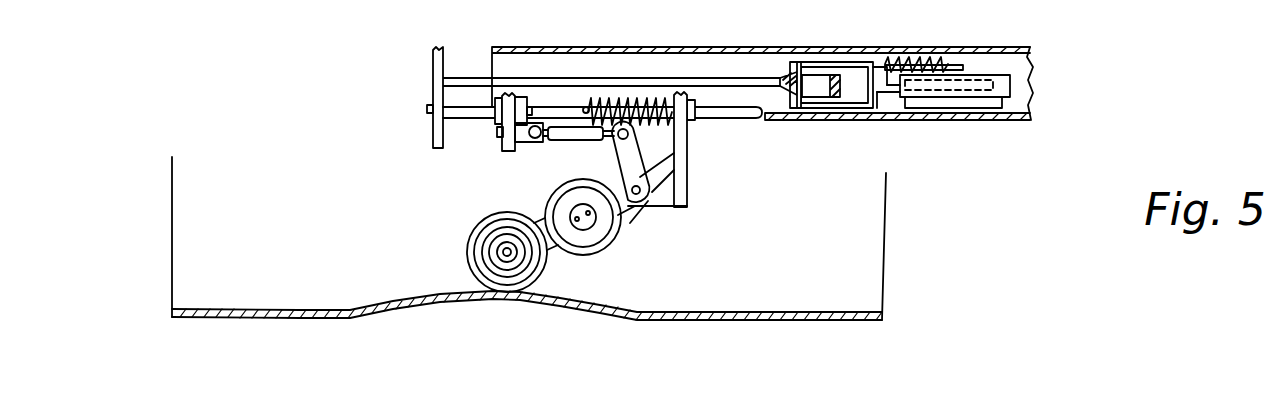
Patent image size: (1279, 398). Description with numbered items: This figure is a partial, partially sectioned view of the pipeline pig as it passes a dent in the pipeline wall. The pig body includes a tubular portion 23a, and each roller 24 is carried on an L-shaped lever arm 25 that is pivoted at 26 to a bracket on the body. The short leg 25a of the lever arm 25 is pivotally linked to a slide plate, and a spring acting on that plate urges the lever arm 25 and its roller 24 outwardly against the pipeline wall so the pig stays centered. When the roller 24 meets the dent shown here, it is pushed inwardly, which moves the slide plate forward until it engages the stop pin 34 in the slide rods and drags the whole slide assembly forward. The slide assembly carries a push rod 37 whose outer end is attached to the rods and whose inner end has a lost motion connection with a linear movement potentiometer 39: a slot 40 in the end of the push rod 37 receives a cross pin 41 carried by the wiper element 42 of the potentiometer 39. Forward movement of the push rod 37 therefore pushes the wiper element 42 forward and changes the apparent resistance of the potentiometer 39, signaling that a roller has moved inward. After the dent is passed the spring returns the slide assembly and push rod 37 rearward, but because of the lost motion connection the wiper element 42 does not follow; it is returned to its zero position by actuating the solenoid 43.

The tubular portion 23a is at (607, 47).
The push rod 37 is at (462, 78).
The stop pin 34 is at (531, 108).
The pivot 26 is at (642, 190).
The short leg 25a is at (620, 152).
The L-shaped lever arm 25 is at (630, 212).
The roller 24 is at (460, 251).
The cross pin 41 is at (806, 80).
The slot 40 is at (818, 83).
The wiper element 42 is at (888, 93).
The solenoid 43 is at (937, 61).
The potentiometer 39 is at (1002, 76).